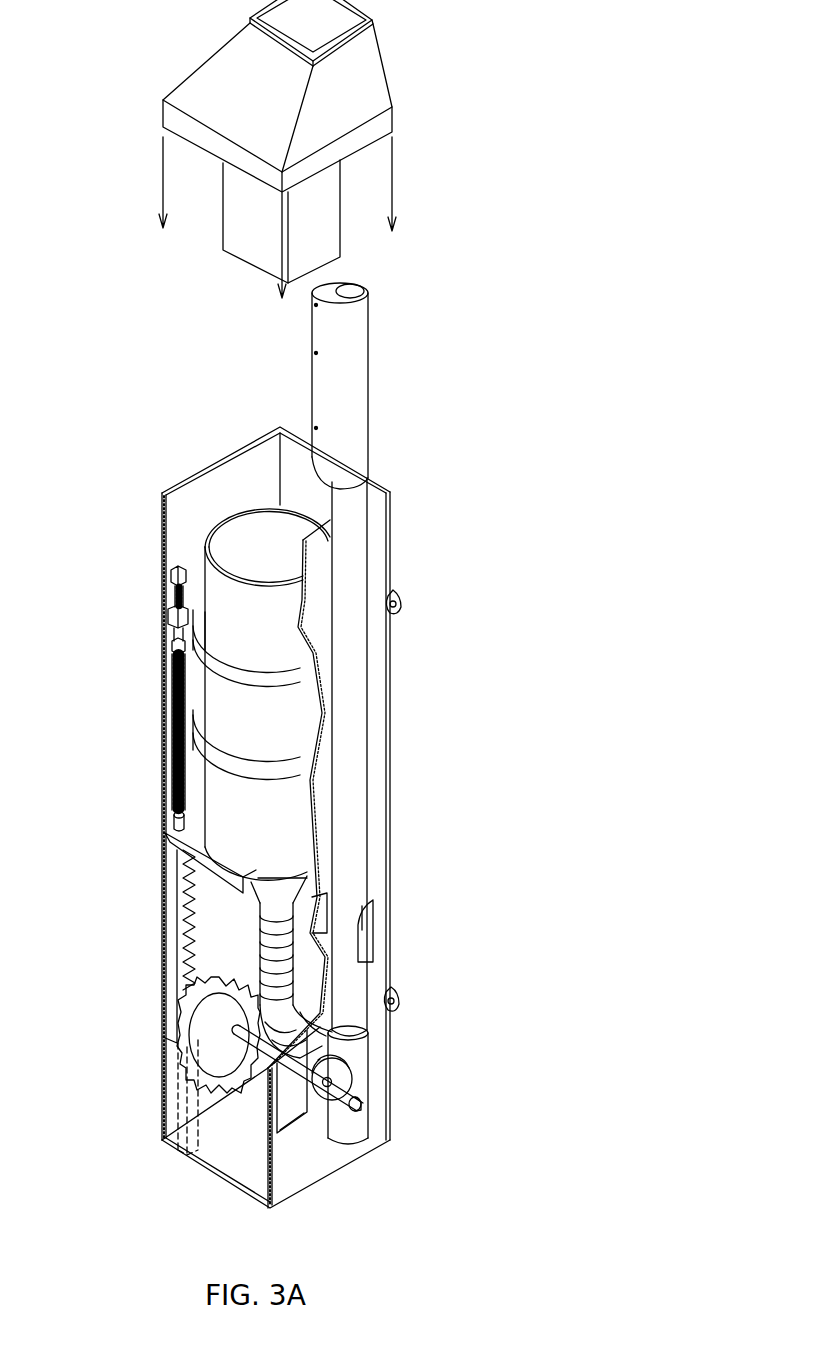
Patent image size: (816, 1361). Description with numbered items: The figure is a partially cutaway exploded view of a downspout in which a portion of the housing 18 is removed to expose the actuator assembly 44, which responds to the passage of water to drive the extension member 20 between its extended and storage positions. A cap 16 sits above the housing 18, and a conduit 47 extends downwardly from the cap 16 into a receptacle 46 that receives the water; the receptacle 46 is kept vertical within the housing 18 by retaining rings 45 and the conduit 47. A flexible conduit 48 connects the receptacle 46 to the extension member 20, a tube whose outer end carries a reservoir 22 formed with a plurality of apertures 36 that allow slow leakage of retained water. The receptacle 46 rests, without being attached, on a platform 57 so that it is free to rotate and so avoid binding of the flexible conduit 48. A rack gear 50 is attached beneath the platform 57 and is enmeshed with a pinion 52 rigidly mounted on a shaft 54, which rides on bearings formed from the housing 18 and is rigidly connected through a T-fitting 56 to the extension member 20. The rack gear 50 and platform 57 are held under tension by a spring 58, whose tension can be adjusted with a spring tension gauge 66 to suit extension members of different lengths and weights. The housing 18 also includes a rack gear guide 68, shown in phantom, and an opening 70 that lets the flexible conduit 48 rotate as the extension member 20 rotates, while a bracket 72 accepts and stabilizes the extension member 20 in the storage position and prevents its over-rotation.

The cap 16 is at (207, 72).
The conduit 47 is at (252, 257).
The reservoir 22 is at (360, 380).
The apertures 36 is at (315, 305).
The housing 18 is at (375, 860).
The extension member 20 is at (360, 550).
The receptacle 46 is at (228, 527).
The retaining rings 45 is at (175, 640).
The spring tension gauge 66 is at (170, 595).
The spring 58 is at (172, 697).
The platform 57 is at (177, 823).
The actuator assembly 44 is at (163, 850).
The rack gear 50 is at (178, 912).
The flexible conduit 48 is at (265, 945).
The pinion 52 is at (213, 1060).
The shaft 54 is at (253, 1043).
The rack gear guide 68 is at (183, 1150).
The T-fitting 56 is at (357, 1135).
The opening 70 is at (302, 1120).
The bracket 72 is at (373, 933).